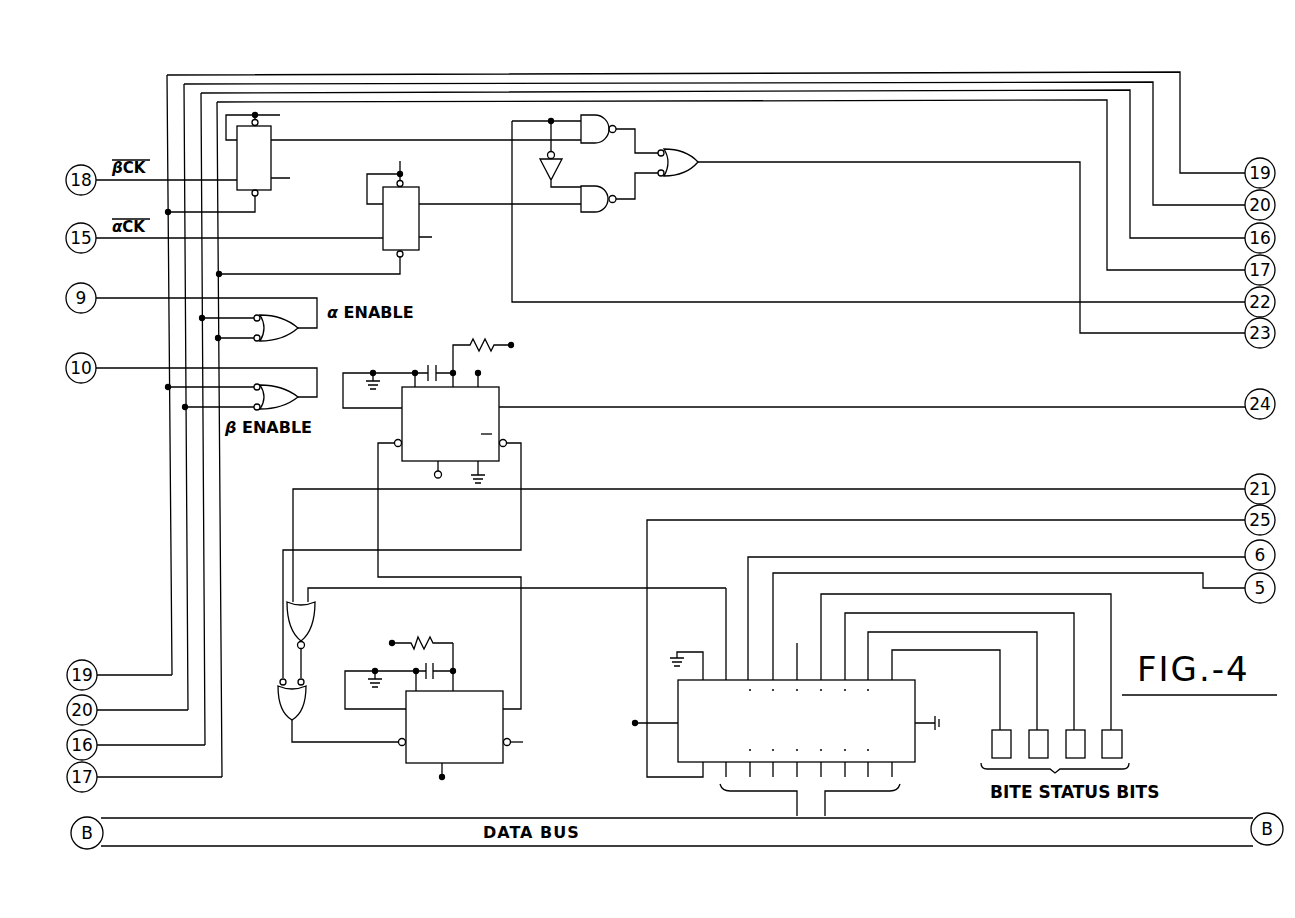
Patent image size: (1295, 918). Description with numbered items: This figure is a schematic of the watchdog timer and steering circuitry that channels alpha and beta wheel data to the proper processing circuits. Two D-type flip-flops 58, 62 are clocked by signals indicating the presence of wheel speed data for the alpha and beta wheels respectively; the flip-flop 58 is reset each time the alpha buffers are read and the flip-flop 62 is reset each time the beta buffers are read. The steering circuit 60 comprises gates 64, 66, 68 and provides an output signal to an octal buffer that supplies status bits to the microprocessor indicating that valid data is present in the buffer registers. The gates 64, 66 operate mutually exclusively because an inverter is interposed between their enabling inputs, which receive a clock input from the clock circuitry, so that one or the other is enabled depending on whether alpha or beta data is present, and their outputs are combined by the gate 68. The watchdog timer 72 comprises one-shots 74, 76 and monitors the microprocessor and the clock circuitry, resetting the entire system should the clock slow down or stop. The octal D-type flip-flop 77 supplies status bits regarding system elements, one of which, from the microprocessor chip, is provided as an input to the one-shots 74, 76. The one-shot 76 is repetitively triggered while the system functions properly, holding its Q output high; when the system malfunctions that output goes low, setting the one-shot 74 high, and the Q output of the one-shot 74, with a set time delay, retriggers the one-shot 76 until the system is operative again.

The D-type flip-flop 58 is at (272, 191).
The D-type flip-flop 62 is at (432, 246).
The steering circuit 60 is at (640, 243).
The gate 64 is at (606, 211).
The gate 66 is at (606, 118).
The gate 68 is at (683, 151).
The one-shot 74 is at (400, 418).
The watchdog timer 72 is at (562, 480).
The one-shot 76 is at (487, 691).
The octal D-type flip-flop 77 is at (917, 704).